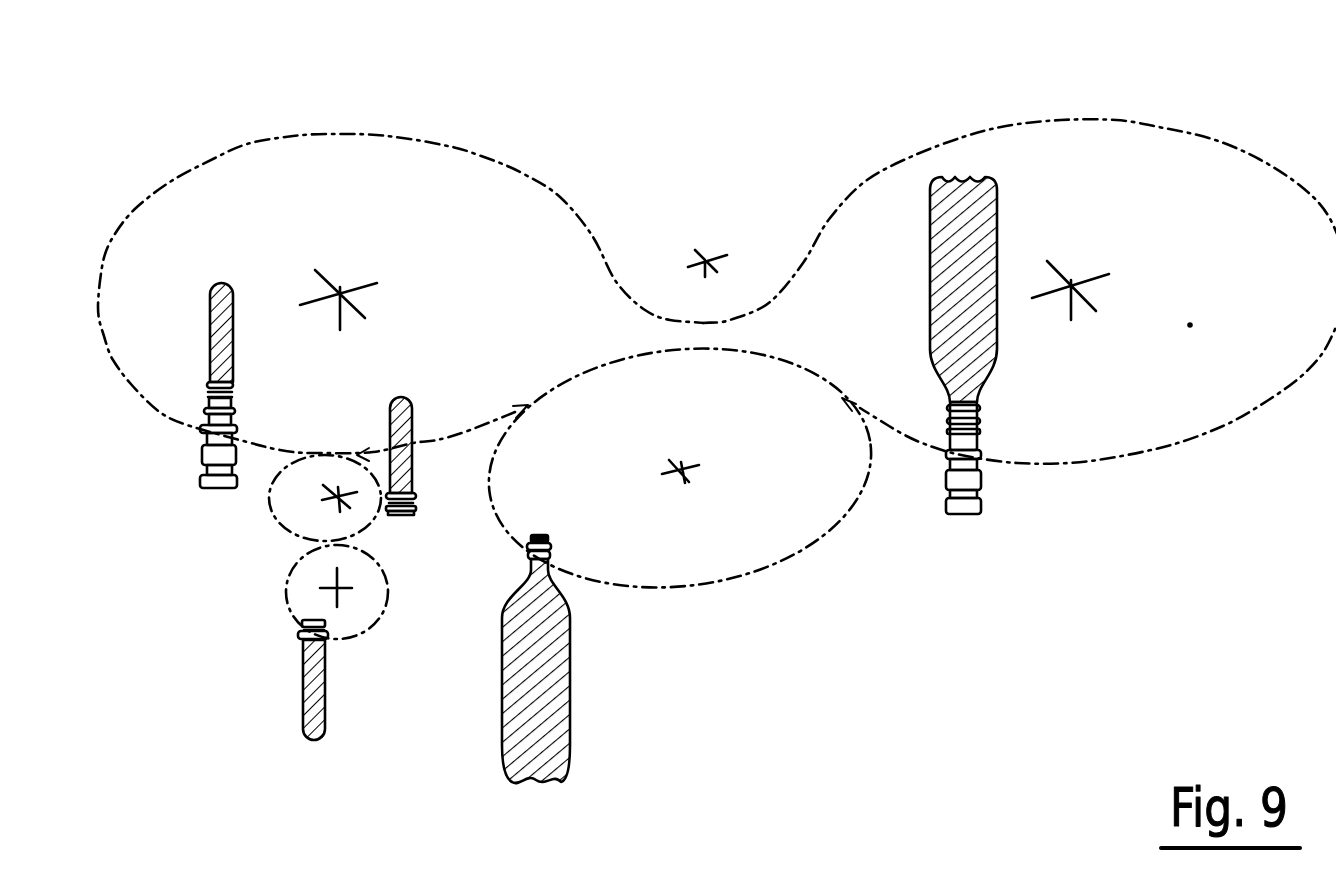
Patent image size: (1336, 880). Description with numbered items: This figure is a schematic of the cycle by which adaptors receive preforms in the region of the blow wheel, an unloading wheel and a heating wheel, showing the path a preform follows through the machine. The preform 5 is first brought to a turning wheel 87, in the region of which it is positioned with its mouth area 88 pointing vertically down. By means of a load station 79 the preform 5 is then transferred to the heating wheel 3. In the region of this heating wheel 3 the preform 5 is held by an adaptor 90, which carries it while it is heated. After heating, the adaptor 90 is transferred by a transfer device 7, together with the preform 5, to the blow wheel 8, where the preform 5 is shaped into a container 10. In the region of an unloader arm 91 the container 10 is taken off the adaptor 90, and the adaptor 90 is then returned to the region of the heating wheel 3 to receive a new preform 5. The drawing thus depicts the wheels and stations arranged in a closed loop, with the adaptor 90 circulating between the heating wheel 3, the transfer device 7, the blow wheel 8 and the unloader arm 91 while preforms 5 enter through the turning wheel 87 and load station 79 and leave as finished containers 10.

The heating wheel 3 is at (528, 203).
The preform 5 is at (224, 283).
The transfer device 7 is at (731, 320).
The blow wheel 8 is at (1160, 150).
The container 10 is at (551, 706).
The load station 79 is at (283, 508).
The turning wheel 87 is at (358, 613).
The mouth area 88 is at (402, 513).
The adaptor 90 is at (196, 457).
The unloader arm 91 is at (758, 547).